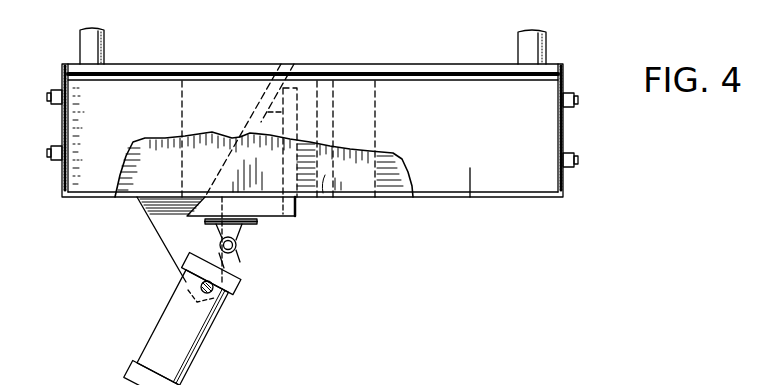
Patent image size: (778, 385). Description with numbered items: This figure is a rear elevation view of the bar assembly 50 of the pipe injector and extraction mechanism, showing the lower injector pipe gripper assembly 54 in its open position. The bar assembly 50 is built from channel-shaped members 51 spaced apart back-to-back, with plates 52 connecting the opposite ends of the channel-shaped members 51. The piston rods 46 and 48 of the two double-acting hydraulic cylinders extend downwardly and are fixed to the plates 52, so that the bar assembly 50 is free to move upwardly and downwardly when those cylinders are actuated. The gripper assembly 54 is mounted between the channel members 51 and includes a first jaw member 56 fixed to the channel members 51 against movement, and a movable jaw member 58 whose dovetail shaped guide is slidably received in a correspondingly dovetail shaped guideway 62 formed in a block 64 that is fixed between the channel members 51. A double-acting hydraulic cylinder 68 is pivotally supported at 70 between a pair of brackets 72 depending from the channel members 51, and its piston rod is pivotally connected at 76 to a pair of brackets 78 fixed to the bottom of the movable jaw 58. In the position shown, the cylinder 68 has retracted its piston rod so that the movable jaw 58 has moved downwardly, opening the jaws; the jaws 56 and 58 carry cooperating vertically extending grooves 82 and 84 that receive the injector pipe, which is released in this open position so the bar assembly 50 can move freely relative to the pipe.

The piston rod 46 is at (523, 47).
The piston rod 48 is at (86, 38).
The bar assembly 50 is at (505, 172).
The channel-shaped member 51 is at (470, 197).
The plate 52 is at (62, 119).
The lower injector pipe gripper assembly 54 is at (318, 64).
The first jaw member 56 is at (362, 197).
The movable jaw member 58 is at (268, 204).
The dovetail shaped guideway 62 is at (256, 124).
The block 64 is at (196, 160).
The double-acting hydraulically actuated cylinder 68 is at (166, 333).
The pivotal support 70 is at (200, 288).
The bracket 72 is at (150, 214).
The pivotal connection 76 is at (219, 245).
The bracket 78 is at (240, 228).
The vertically extending groove 82 is at (323, 200).
The vertically extending groove 84 is at (302, 199).